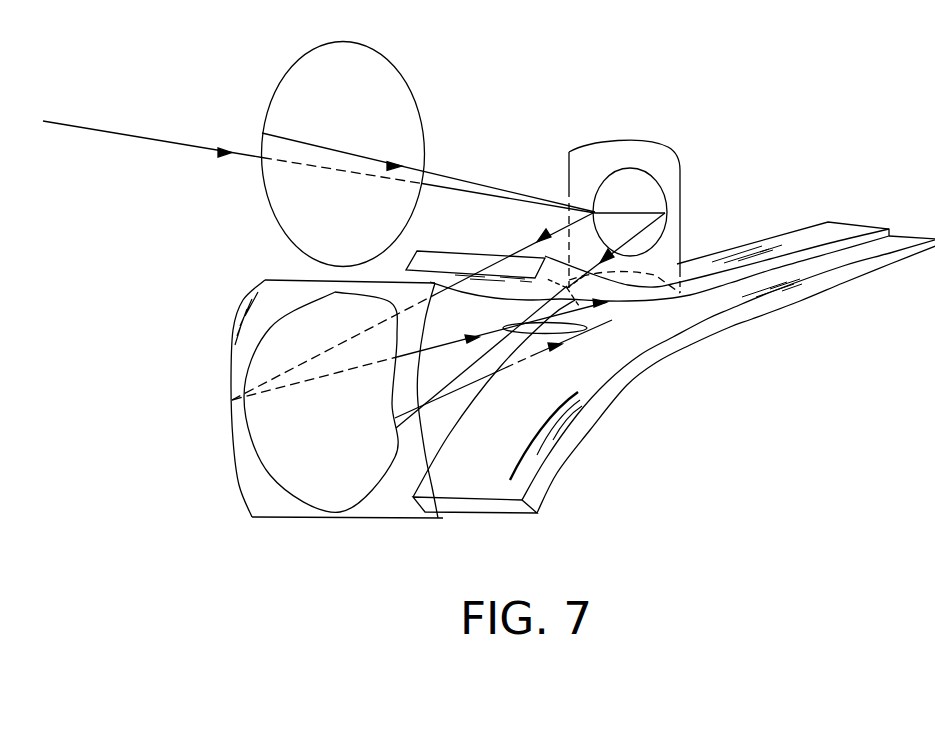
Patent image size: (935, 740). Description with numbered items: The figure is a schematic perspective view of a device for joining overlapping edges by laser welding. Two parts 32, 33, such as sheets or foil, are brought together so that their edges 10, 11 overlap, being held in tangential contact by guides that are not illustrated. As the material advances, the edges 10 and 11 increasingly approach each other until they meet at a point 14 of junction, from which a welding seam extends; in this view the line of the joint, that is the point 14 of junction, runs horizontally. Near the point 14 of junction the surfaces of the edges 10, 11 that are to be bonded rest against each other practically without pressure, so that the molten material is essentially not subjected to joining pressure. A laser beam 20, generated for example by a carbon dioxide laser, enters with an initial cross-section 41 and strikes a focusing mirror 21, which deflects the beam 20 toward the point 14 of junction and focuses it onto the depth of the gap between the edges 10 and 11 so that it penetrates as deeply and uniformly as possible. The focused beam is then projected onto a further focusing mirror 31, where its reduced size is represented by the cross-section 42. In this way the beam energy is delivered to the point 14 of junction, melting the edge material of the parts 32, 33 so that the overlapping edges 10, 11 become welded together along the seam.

The edge 10 is at (516, 268).
The edge 11 is at (432, 505).
The point of junction 14 is at (655, 298).
The laser beam 20 is at (500, 190).
The focusing mirror 21 is at (647, 157).
The focusing mirror 31 is at (278, 508).
The part 32 is at (803, 240).
The part 33 is at (900, 240).
The initial cross-section 41 is at (383, 58).
The cross-section 42 is at (565, 330).